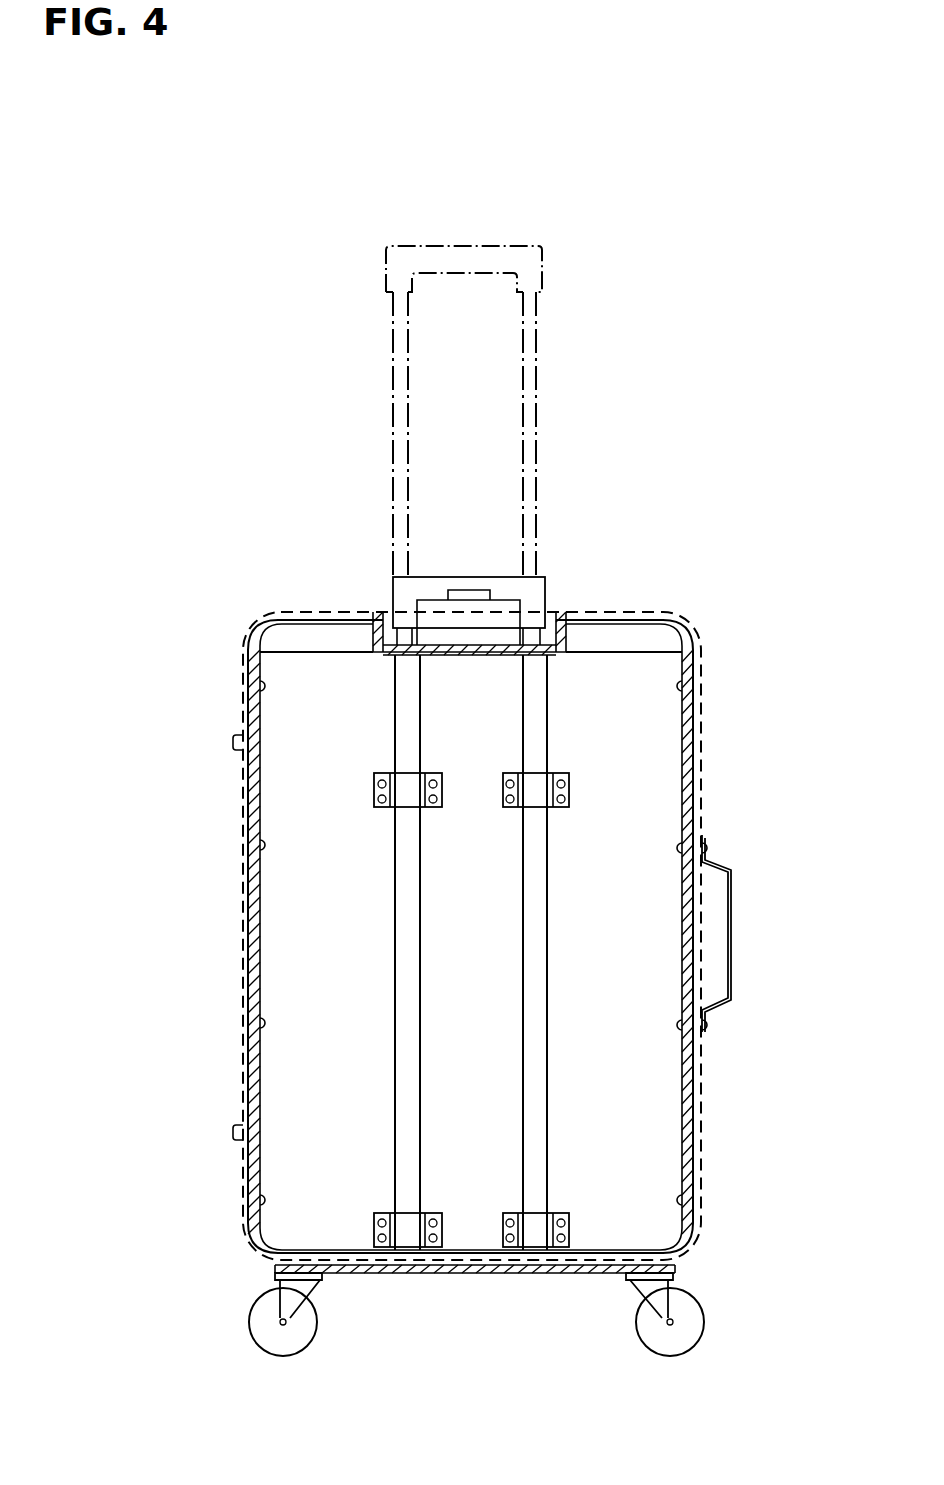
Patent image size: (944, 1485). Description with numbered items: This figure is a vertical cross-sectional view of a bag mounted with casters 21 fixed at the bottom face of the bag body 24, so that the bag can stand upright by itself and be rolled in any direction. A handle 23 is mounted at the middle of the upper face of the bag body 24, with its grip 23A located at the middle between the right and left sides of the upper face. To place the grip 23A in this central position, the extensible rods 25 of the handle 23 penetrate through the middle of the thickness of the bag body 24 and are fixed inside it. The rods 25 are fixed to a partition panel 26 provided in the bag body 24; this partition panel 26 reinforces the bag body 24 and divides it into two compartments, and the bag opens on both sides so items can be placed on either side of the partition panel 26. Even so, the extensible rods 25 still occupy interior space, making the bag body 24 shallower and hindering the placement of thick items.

The casters 21 is at (300, 1330).
The handle 23 is at (549, 562).
The grip 23A is at (432, 586).
The bag body 24 is at (713, 692).
The extensible rods 25 is at (403, 903).
The partition panel 26 is at (498, 1106).